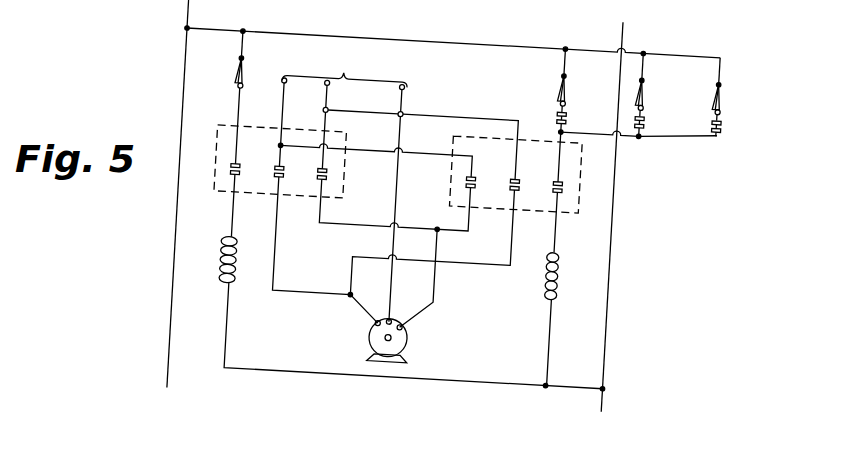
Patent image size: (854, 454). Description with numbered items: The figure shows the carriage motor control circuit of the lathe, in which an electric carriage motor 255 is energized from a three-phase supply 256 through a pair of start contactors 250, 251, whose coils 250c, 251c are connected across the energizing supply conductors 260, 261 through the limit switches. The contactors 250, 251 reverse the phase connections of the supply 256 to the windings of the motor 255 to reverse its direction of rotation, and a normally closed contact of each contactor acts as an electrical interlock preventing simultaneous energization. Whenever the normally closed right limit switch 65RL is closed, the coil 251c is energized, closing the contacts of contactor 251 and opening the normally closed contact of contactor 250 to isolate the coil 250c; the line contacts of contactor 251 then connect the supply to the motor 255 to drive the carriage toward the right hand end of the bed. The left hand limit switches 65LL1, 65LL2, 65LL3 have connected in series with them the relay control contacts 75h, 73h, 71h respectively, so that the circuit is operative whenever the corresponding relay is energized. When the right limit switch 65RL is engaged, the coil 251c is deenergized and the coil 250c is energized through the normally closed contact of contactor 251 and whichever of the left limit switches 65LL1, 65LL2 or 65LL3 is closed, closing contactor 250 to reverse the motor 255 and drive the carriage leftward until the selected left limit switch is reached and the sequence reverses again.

The conductor 260 is at (189, 13).
The conductor 261 is at (623, 42).
The right limit switch 65RL is at (245, 72).
The three-phase supply 256 is at (345, 71).
The start contactor 250 is at (273, 156).
The start contactor 251 is at (547, 173).
The left limit switch 65LL1 is at (561, 87).
The contact 75h is at (570, 119).
The left limit switch 65LL2 is at (645, 97).
The contact 73h is at (650, 122).
The left limit switch 65LL3 is at (723, 100).
The contact 71h is at (724, 132).
The contactor coil 251c is at (222, 266).
The contactor coil 250c is at (559, 283).
The carriage motor 255 is at (408, 338).